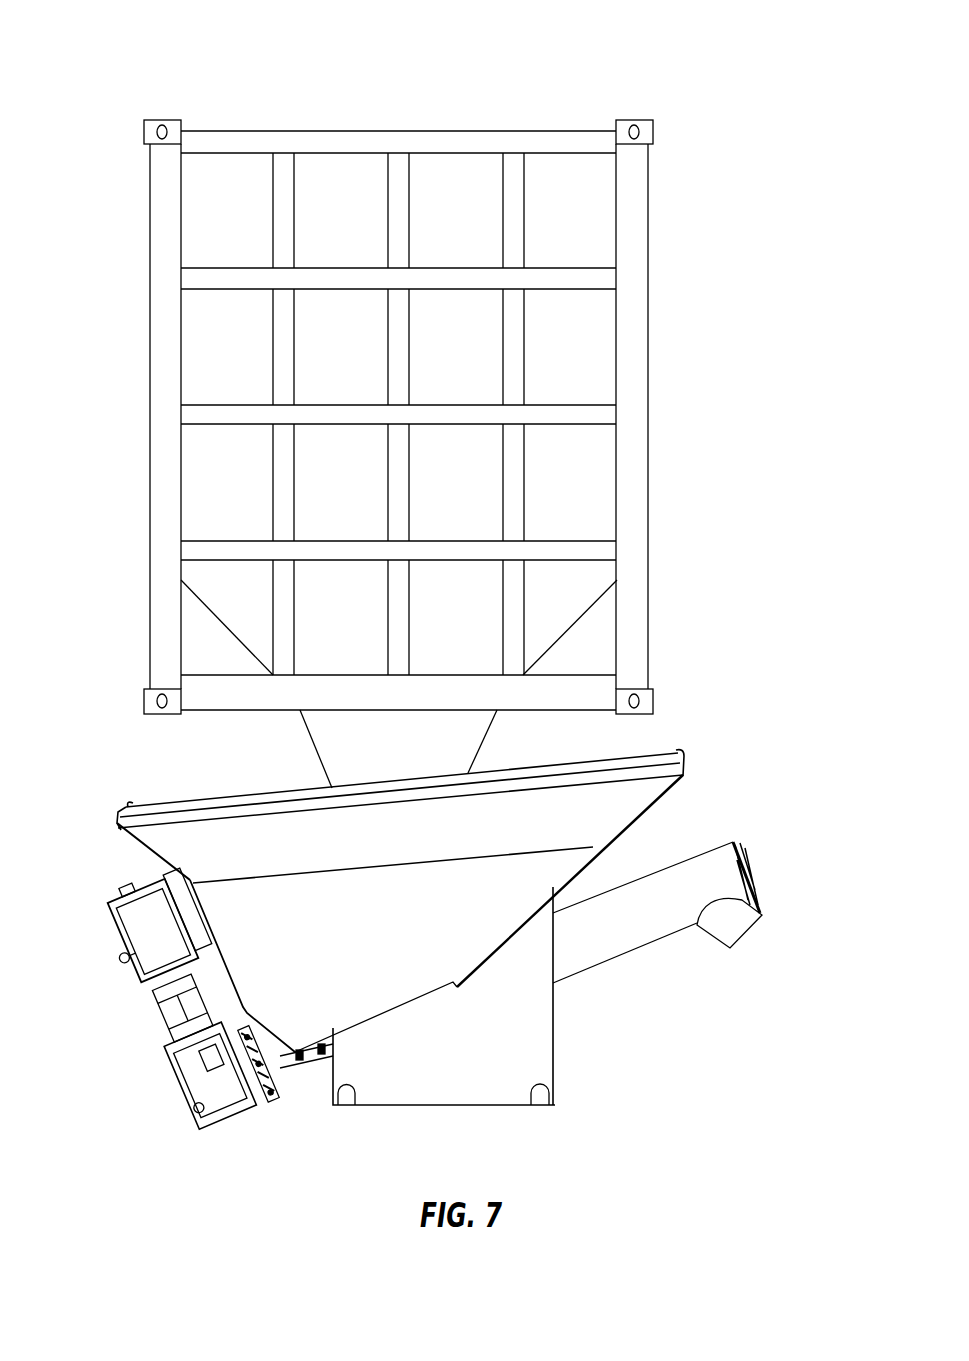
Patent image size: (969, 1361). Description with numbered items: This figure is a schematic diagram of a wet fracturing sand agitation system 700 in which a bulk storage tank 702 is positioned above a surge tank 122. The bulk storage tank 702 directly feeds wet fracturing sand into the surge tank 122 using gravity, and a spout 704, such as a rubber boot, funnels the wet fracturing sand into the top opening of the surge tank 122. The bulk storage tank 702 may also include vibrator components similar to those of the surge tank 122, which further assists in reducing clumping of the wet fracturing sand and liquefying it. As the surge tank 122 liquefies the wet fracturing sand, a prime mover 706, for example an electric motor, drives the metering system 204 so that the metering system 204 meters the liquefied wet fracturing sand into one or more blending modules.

The wet fracturing sand agitation system 700 is at (160, 68).
The bulk storage tank 702 is at (650, 382).
The spout 704 is at (497, 728).
The surge tank 122 is at (645, 798).
The metering system 204 is at (607, 967).
The prime mover 706 is at (98, 893).